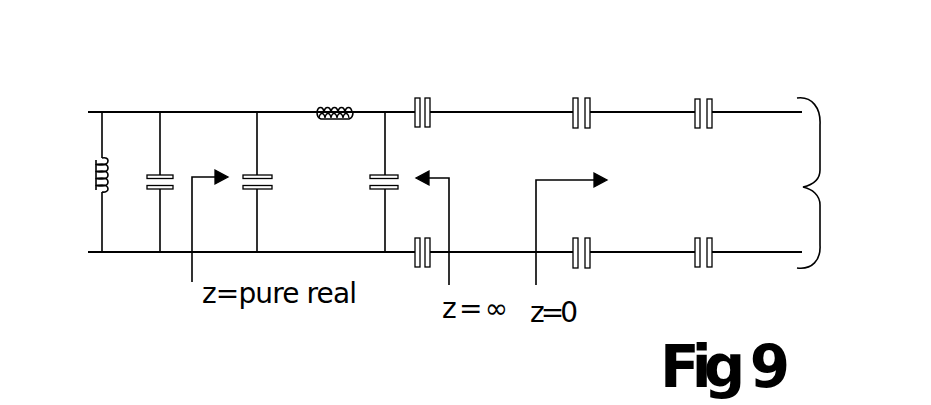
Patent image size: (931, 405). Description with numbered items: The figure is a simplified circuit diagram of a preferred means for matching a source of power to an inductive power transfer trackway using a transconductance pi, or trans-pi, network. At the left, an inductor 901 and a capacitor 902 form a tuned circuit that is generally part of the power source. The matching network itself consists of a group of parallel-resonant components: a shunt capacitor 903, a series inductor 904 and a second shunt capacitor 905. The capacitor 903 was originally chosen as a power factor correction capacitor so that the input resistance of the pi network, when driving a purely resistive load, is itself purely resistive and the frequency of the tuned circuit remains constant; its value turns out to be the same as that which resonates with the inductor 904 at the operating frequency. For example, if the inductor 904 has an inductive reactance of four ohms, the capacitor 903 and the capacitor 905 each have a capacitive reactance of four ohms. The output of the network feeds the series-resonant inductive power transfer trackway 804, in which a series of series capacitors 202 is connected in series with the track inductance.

The inductor of power source tuned circuit 901 is at (93, 173).
The capacitor of power source tuned circuit 902 is at (197, 153).
The power factor correction capacitor 903 is at (272, 185).
The inductor 904 is at (345, 104).
The capacitor 905 is at (370, 185).
The series capacitors 202 is at (445, 58).
The series-resonant inductive power transfer trackway 804 is at (833, 183).